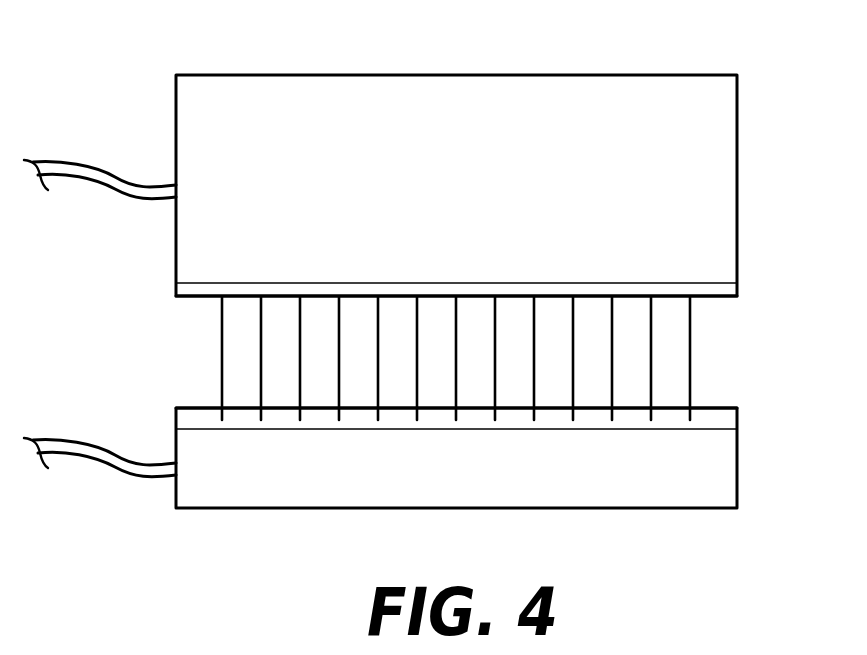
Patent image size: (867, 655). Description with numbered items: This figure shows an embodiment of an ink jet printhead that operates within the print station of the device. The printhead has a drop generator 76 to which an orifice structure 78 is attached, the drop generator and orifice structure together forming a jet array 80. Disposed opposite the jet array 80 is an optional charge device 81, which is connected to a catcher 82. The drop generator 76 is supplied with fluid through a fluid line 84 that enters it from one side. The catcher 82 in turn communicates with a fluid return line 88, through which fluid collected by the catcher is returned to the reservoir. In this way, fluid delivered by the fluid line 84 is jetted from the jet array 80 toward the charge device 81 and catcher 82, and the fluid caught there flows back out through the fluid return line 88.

The drop generator 76 is at (567, 75).
The orifice structure 78 is at (737, 299).
The jet array 80 is at (222, 349).
The charge device 81 is at (712, 405).
The catcher 82 is at (737, 462).
The fluid line 84 is at (68, 162).
The fluid return line 88 is at (57, 440).